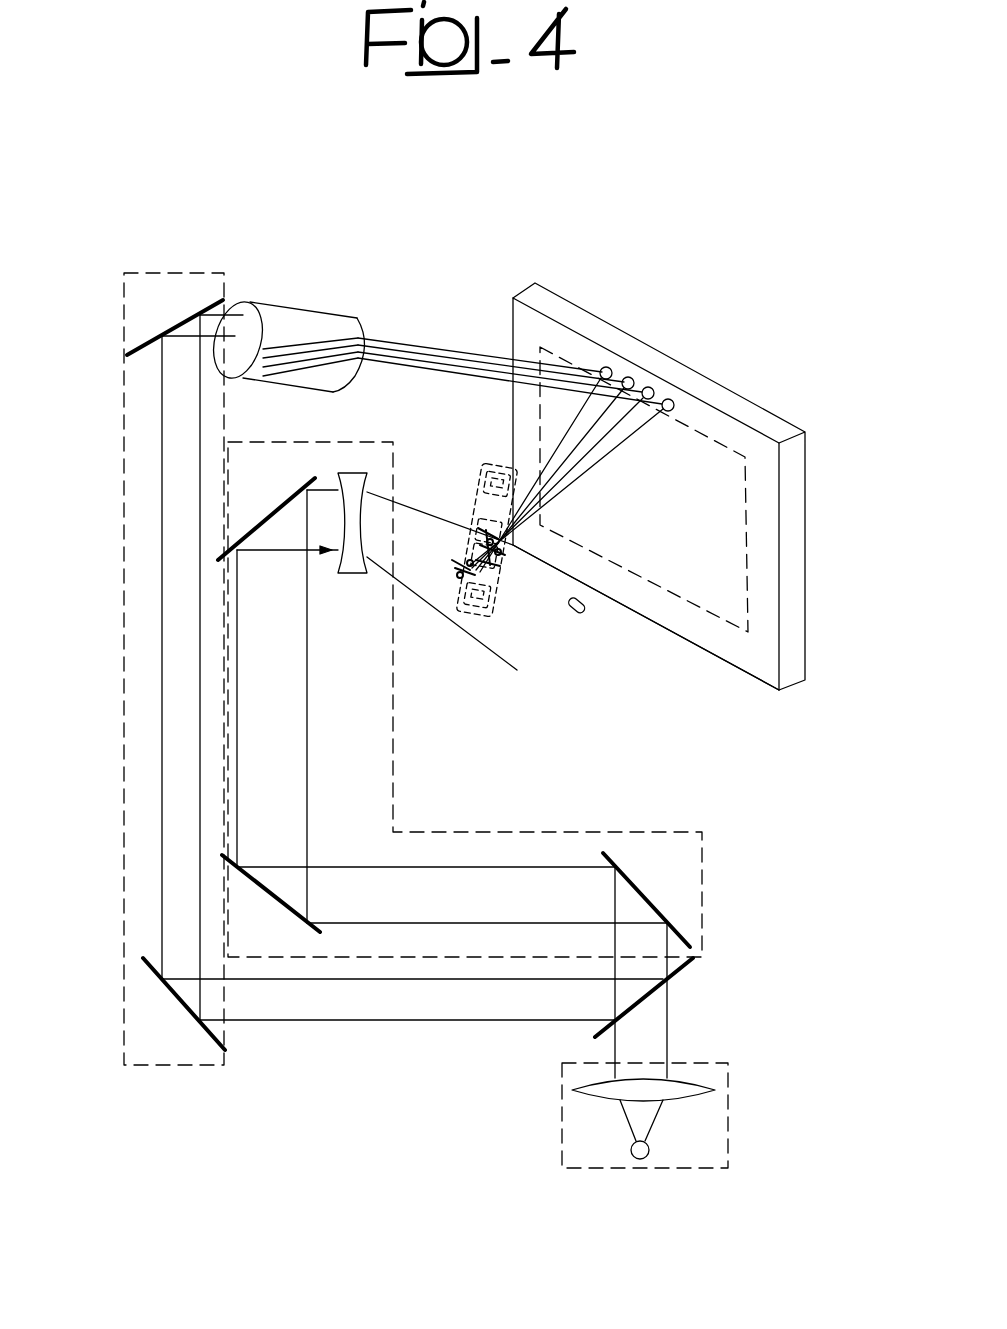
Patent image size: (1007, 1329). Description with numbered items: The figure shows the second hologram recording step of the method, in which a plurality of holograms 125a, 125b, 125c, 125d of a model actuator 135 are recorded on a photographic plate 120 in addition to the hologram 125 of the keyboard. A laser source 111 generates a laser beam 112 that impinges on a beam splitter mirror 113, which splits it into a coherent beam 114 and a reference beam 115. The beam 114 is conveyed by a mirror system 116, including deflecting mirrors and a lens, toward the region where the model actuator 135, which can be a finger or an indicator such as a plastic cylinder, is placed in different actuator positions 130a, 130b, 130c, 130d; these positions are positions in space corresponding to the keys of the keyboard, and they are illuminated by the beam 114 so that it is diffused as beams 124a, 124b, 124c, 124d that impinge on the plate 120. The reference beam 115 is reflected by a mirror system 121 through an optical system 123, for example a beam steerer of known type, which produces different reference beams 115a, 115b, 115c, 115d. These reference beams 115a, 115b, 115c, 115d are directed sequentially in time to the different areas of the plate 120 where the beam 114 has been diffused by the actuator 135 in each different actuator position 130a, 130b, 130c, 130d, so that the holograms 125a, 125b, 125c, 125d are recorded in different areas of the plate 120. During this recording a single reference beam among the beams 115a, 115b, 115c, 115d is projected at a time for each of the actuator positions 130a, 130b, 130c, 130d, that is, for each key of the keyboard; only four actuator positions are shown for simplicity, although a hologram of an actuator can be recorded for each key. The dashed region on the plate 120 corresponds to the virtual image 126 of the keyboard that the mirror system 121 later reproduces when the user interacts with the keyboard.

The laser source 111 is at (730, 1133).
The laser beam 112 is at (667, 1036).
The beam splitter mirror 113 is at (697, 983).
The beam 114 is at (547, 887).
The reference beam 115 is at (368, 1022).
The reference beam 115a is at (413, 340).
The reference beam 115b is at (435, 352).
The reference beam 115c is at (405, 363).
The reference beam 115d is at (437, 370).
The mirror system 116 is at (705, 858).
The photographic plate 120 is at (793, 500).
The mirror system 121 is at (124, 882).
The optical system 123 is at (298, 326).
The diffused beam 124a is at (513, 545).
The diffused beam 124b is at (562, 468).
The diffused beam 124c is at (592, 458).
The diffused beam 124d is at (630, 447).
The hologram 125 is at (720, 658).
The hologram 125a is at (612, 367).
The hologram 125b is at (635, 378).
The hologram 125c is at (653, 388).
The hologram 125d is at (673, 402).
The virtual image 126 is at (510, 652).
The actuator position 130a is at (458, 585).
The actuator position 130b is at (466, 528).
The actuator position 130c is at (492, 585).
The actuator position 130d is at (497, 612).
The model actuator 135 is at (586, 607).